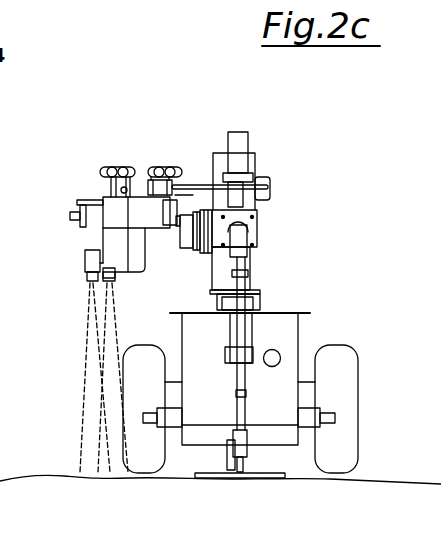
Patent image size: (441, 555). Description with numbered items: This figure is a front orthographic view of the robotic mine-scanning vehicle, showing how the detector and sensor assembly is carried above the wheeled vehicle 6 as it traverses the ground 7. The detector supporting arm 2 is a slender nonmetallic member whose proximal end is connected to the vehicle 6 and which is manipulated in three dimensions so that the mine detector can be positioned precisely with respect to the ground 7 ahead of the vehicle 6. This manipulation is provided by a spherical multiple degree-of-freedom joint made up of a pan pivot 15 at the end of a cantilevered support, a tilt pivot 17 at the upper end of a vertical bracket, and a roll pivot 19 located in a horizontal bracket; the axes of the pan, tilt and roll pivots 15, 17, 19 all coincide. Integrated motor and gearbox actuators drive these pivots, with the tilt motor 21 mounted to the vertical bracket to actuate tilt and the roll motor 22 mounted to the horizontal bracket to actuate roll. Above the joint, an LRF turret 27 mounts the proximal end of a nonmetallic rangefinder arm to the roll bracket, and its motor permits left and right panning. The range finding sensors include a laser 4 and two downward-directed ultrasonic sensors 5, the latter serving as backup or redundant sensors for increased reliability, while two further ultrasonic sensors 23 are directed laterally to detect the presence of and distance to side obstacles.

The detector supporting arm 2 is at (243, 392).
The laser 4 is at (140, 213).
The ultrasonic sensor 5 is at (83, 262).
The wheeled vehicle 6 is at (288, 325).
The ground 7 is at (293, 482).
The pan pivot 15 is at (258, 290).
The tilt pivot 17 is at (210, 197).
The roll pivot 19 is at (257, 223).
The tilt motor 21 is at (160, 237).
The roll motor 22 is at (230, 343).
The lateral ultrasonic sensors 23 is at (162, 167).
The LRF turret 27 is at (235, 132).